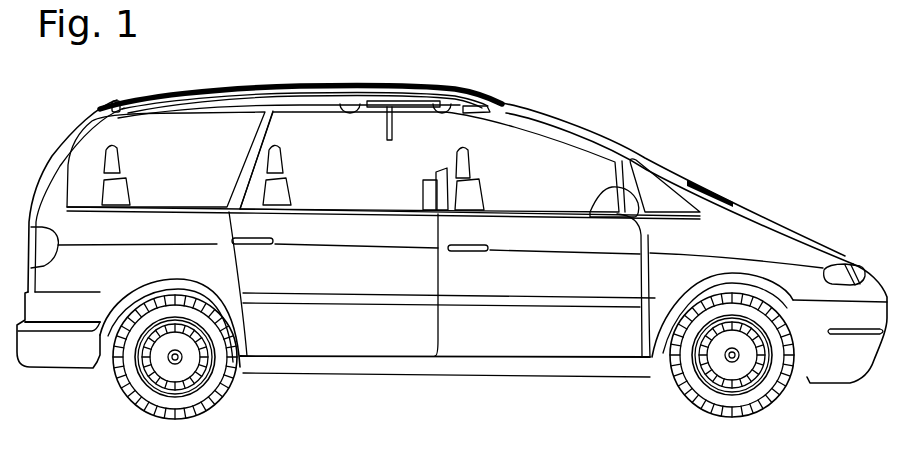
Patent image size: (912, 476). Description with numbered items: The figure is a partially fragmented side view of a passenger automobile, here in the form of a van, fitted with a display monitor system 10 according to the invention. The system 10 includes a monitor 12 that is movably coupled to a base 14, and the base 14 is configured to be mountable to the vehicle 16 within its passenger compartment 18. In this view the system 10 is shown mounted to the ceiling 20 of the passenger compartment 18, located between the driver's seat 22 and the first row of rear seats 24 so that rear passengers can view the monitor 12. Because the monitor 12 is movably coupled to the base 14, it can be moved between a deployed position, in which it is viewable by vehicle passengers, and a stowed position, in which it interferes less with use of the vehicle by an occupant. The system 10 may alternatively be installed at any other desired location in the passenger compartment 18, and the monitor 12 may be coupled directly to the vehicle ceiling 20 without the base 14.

The display monitor system 10 is at (338, 125).
The monitor 12 is at (396, 120).
The base 14 is at (437, 112).
The vehicle 16 is at (768, 192).
The passenger compartment 18 is at (530, 145).
The ceiling 20 is at (362, 85).
The driver's seat 22 is at (470, 200).
The first row of rear seats 24 is at (283, 203).